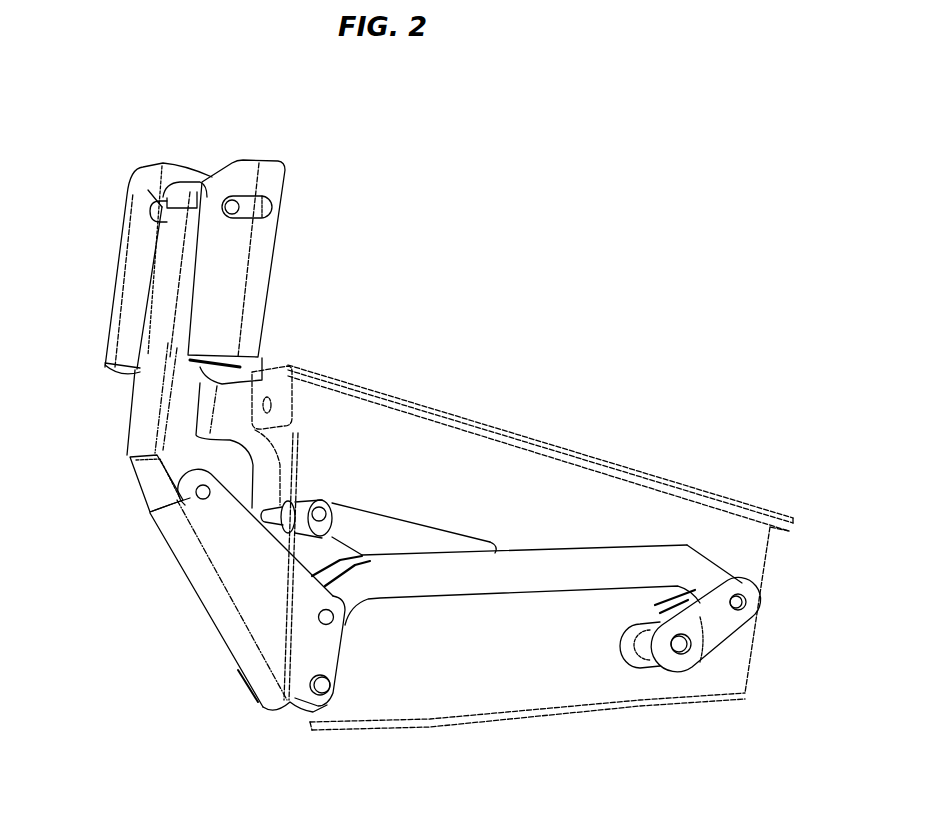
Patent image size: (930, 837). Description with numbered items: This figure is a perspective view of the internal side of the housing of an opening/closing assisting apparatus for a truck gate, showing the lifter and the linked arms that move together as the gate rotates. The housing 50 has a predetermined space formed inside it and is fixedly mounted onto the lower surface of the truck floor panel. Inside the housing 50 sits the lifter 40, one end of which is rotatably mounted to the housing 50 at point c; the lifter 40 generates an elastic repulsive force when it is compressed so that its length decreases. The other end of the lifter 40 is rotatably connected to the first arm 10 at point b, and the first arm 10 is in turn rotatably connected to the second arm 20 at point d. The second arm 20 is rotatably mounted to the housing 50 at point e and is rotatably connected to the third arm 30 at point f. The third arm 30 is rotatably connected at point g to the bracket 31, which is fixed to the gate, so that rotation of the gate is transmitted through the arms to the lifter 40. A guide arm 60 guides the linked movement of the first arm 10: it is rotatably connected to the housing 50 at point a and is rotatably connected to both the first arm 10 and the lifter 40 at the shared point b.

The first arm 10 is at (480, 573).
The second arm 20 is at (227, 587).
The third arm 30 is at (163, 363).
The bracket 31 is at (248, 263).
The lifter 40 is at (367, 530).
The housing 50 is at (438, 408).
The guide arm 60 is at (705, 625).
The point a is at (681, 652).
The point b is at (745, 600).
The point c is at (310, 500).
The point d is at (340, 625).
The point e is at (323, 696).
The point f is at (152, 513).
The point g is at (202, 199).